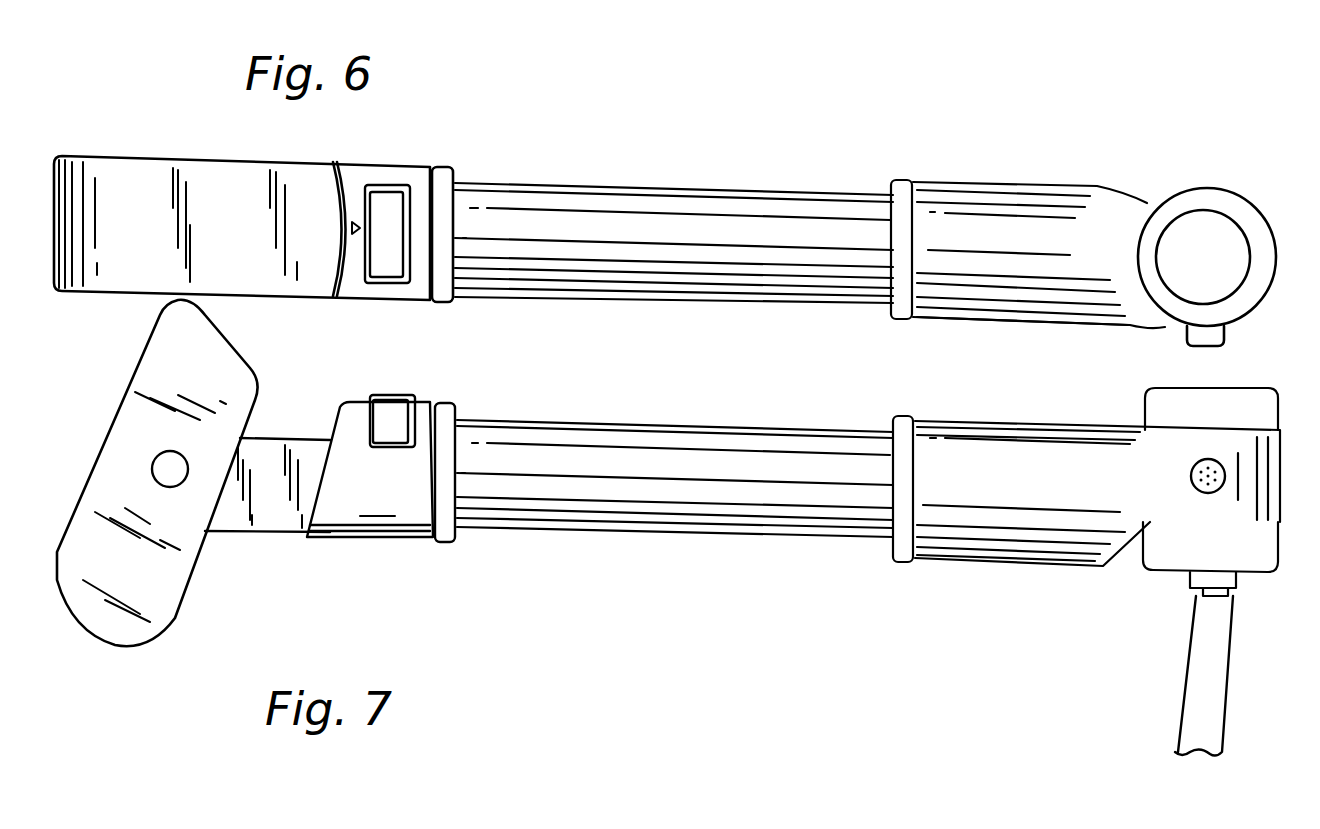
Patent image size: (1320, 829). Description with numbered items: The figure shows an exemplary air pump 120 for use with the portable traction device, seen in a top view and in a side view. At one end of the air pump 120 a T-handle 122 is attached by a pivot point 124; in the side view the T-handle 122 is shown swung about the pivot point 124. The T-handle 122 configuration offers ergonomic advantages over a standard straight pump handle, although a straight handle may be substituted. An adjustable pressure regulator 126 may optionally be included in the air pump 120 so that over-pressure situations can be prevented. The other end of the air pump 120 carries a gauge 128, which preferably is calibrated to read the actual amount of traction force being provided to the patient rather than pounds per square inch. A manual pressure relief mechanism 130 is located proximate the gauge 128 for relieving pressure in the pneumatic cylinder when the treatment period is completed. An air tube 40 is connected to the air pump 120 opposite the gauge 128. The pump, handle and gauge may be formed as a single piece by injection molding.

In FIG. 6, the air pump 120 is at (905, 140).
In FIG. 7, the air pump 120 is at (600, 545).
In FIG. 7, the T-handle 122 is at (115, 634).
In FIG. 7, the pivot point 124 is at (170, 470).
In FIG. 6, the adjustable pressure regulator 126 is at (378, 206).
In FIG. 7, the adjustable pressure regulator 126 is at (392, 421).
In FIG. 6, the gauge 128 is at (1217, 212).
In FIG. 7, the manual pressure relief mechanism 130 is at (1190, 475).
In FIG. 7, the air tube 40 is at (1210, 655).